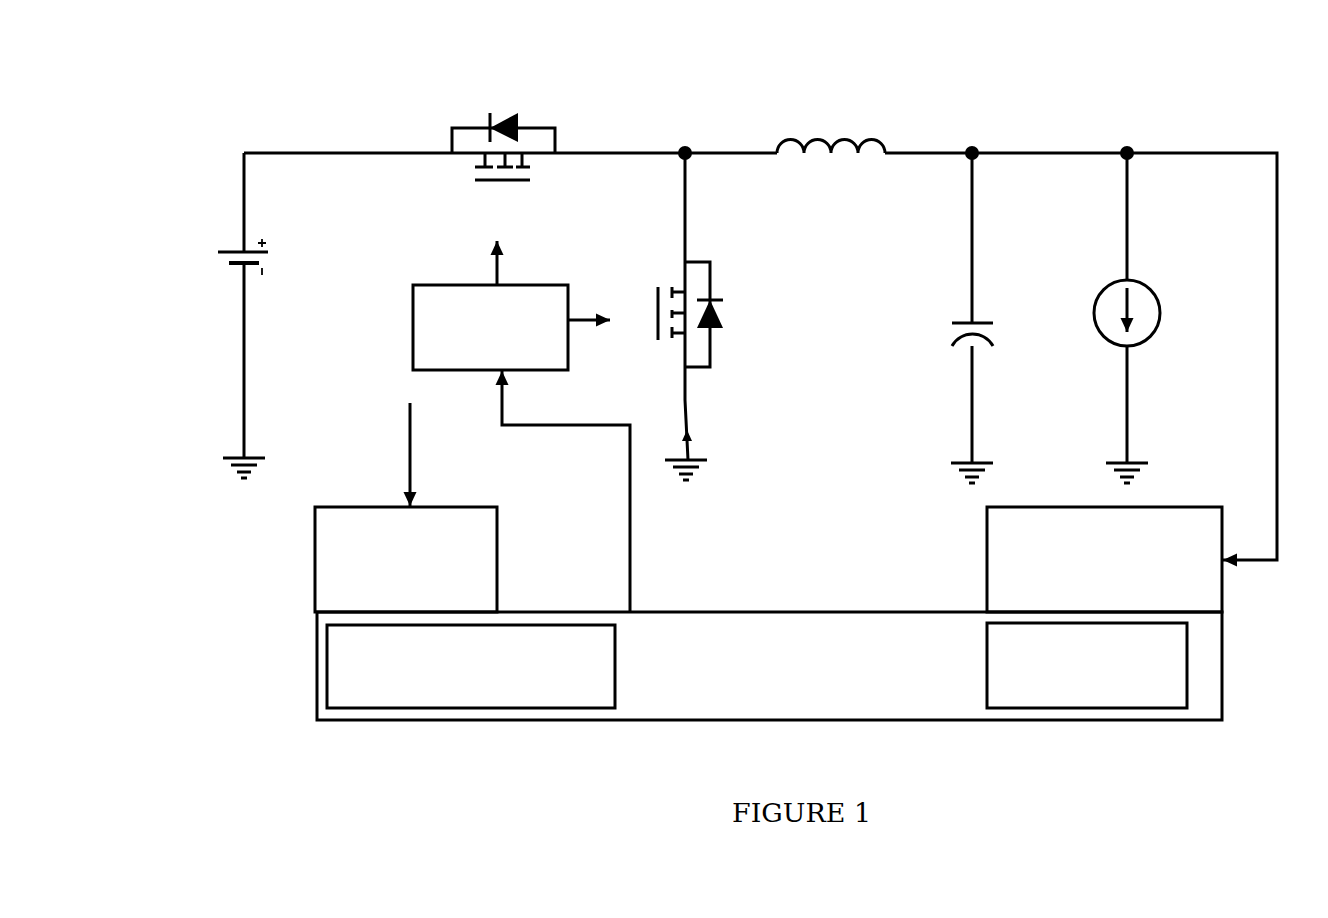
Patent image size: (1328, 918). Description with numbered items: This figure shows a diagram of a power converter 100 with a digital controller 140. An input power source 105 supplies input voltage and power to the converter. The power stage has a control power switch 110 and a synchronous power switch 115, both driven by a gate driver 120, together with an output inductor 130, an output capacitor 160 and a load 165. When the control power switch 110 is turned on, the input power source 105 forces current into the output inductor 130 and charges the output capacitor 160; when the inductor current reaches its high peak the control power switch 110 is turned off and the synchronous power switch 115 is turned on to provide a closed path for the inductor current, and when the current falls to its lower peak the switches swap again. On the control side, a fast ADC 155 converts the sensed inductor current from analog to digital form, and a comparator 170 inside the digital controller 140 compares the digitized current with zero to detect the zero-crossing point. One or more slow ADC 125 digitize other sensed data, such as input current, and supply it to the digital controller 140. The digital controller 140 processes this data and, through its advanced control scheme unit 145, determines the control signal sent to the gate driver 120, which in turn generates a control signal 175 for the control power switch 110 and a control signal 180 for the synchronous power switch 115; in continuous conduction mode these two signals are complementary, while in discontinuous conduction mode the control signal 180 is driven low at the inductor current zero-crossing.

The power converter 100 is at (782, 40).
The input power source 105 is at (272, 252).
The control power switch 110 is at (476, 106).
The synchronous power switch 115 is at (718, 279).
The gate driver 120 is at (428, 323).
The slow ADC 125 is at (332, 561).
The output inductor 130 is at (851, 132).
The digital controller 140 is at (754, 626).
The advanced control scheme unit 145 is at (339, 683).
The fast ADC 155 is at (1201, 594).
The output capacitor 160 is at (946, 339).
The load 165 is at (1148, 280).
The comparator 170 is at (1062, 692).
The control signal 175 is at (488, 259).
The control signal 180 is at (585, 312).